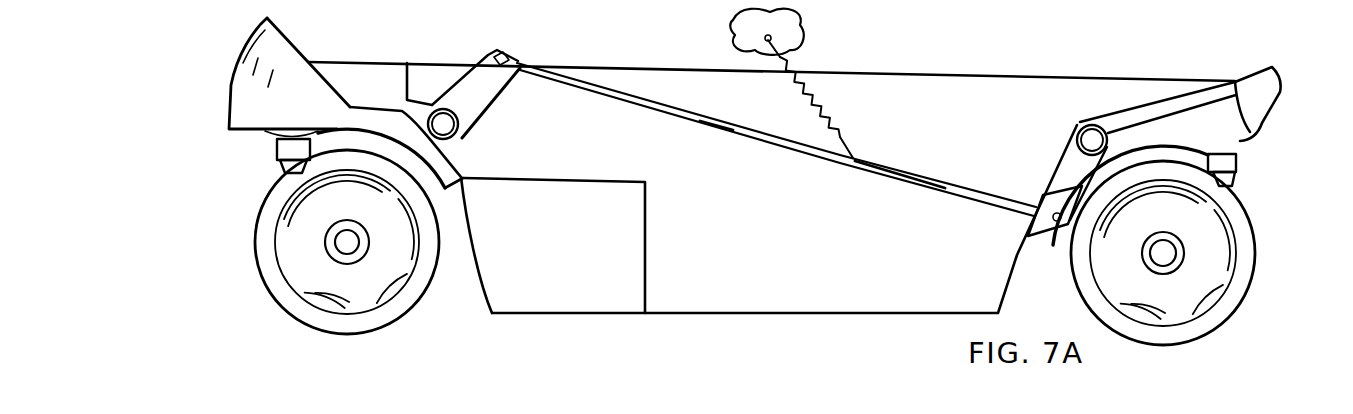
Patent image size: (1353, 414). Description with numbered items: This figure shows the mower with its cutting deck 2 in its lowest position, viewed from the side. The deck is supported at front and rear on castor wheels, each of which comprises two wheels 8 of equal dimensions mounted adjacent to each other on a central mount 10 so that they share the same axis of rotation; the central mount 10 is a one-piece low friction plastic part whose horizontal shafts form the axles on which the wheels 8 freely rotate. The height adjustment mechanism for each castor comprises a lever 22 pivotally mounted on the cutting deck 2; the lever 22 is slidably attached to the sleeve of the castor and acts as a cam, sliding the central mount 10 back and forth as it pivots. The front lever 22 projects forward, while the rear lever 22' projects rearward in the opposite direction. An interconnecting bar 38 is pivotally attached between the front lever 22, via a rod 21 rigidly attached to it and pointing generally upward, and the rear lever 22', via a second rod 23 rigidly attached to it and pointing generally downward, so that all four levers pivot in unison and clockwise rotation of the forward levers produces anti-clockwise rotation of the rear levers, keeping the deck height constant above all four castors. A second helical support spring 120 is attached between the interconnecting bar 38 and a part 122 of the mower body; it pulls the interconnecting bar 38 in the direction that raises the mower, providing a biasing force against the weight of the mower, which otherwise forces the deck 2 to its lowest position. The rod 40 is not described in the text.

The cutting deck 2 is at (820, 279).
The wheel 8 is at (273, 267).
The central mount 10 is at (282, 170).
The rod 21 is at (478, 102).
The lever 22 is at (262, 96).
The lever 22' is at (1209, 113).
The second rod 23 is at (1068, 168).
The interconnecting bar 38 is at (771, 97).
The connecting rod 40 is at (517, 60).
The second helical support spring 120 is at (813, 103).
The part of the body of the mower 122 is at (792, 37).